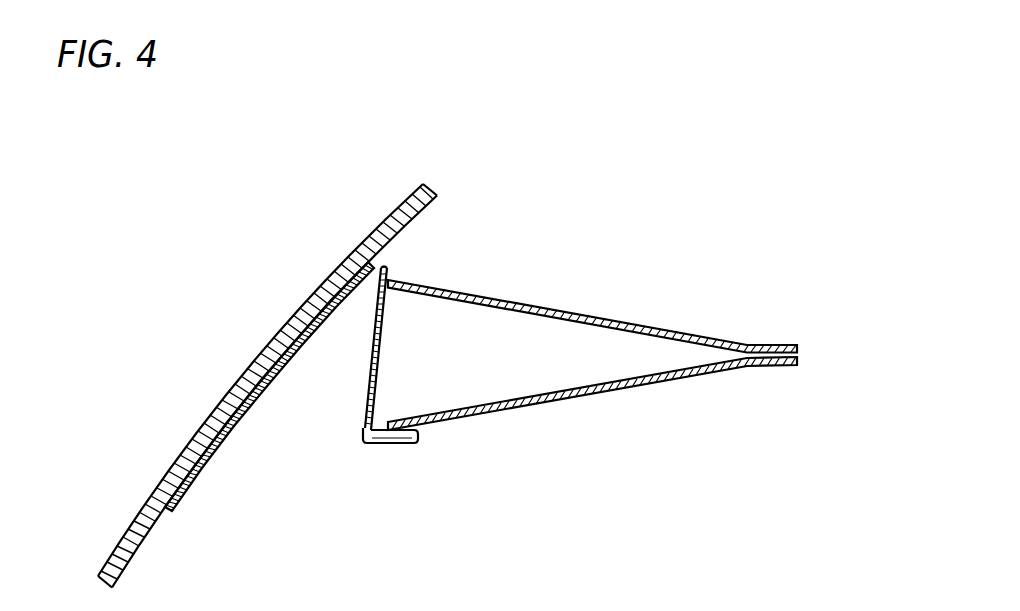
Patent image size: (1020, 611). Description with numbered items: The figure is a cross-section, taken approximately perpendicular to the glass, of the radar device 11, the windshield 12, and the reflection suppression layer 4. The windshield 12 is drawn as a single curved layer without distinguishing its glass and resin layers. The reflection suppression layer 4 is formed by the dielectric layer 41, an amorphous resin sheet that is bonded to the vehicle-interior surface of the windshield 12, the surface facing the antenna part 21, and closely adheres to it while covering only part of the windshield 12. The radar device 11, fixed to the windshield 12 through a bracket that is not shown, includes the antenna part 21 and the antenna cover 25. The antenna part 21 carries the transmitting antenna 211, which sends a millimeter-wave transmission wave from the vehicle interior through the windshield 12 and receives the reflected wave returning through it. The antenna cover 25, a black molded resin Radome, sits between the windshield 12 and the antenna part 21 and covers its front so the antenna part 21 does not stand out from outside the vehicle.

The reflection suppression layer 4 is at (269, 409).
The dielectric layer 41 is at (245, 421).
The windshield 12 is at (275, 348).
The radar device 11 is at (564, 322).
The antenna part 21 is at (618, 253).
The transmitting antenna 211 is at (605, 488).
The antenna cover 25 is at (363, 410).